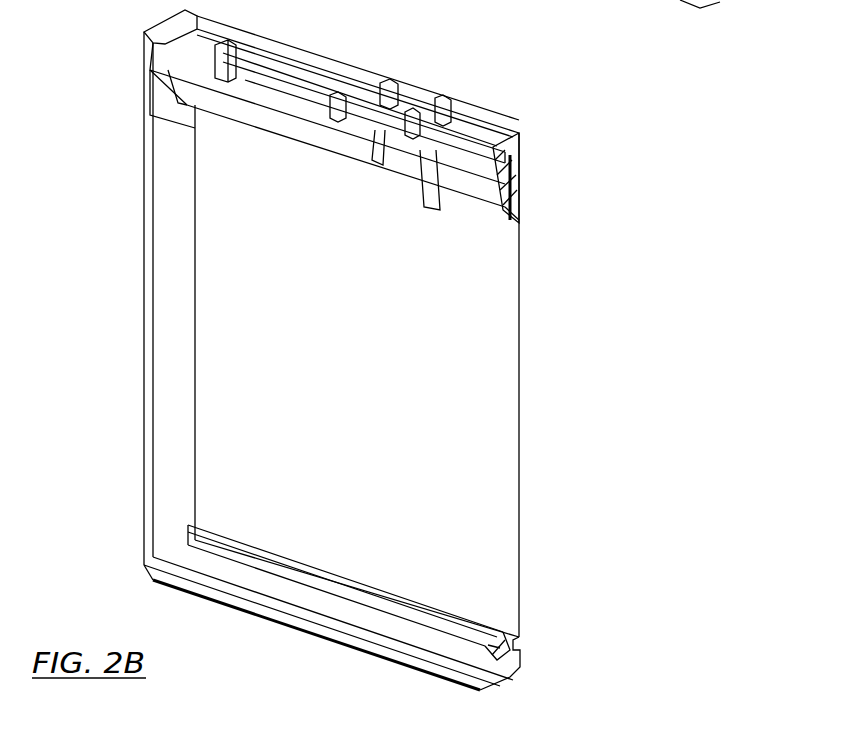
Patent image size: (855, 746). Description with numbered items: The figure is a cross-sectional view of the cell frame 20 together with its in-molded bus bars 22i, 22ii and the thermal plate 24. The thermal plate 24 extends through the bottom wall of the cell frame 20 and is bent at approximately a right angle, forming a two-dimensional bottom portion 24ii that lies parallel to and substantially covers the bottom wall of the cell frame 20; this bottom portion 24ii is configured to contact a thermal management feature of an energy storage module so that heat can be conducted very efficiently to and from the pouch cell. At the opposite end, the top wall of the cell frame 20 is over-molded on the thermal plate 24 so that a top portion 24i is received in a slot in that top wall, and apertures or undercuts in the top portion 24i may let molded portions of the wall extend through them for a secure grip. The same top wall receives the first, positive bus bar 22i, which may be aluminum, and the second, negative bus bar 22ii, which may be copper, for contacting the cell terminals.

The cell frame 20 is at (165, 258).
The first bus bar 22i is at (243, 53).
The second bus bar 22ii is at (475, 115).
The thermal plate 24 is at (450, 388).
The top portion 24i is at (520, 183).
The bottom portion 24ii is at (490, 677).